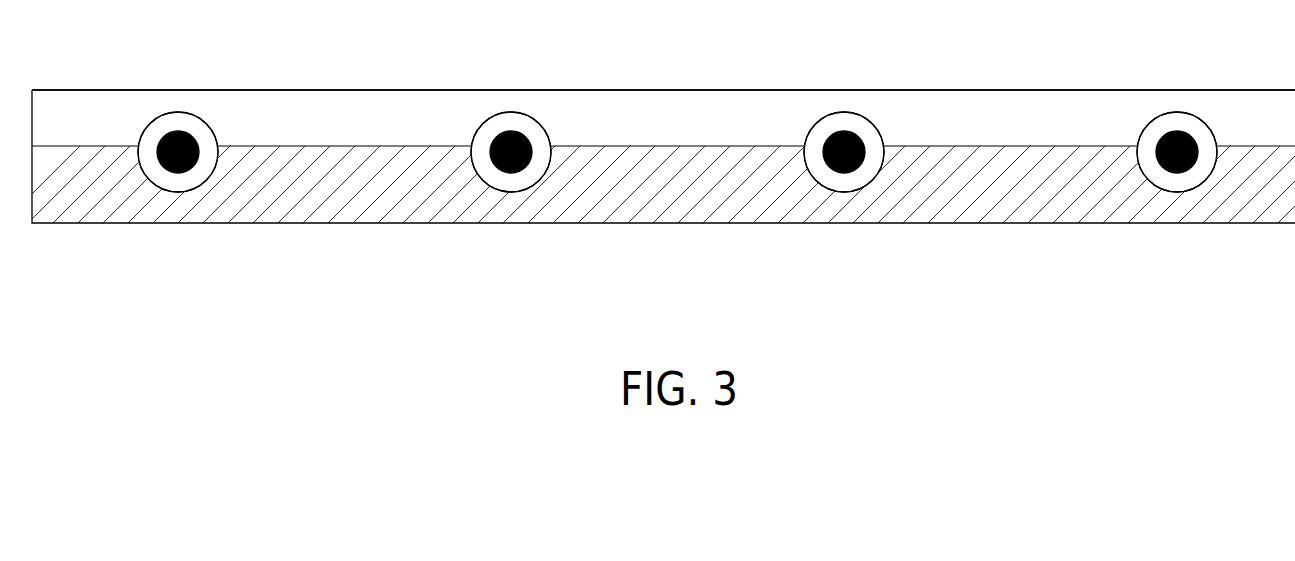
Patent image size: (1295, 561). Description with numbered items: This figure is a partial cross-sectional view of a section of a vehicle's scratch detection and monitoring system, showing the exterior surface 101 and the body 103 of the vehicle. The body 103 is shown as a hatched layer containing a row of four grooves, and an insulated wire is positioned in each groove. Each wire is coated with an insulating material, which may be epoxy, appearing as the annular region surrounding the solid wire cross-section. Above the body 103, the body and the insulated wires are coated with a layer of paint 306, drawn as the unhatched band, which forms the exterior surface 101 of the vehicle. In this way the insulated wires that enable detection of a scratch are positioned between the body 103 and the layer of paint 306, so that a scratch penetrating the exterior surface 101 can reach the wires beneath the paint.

The exterior surface 101 is at (701, 89).
The body 103 is at (86, 188).
The layer of paint 306 is at (323, 116).